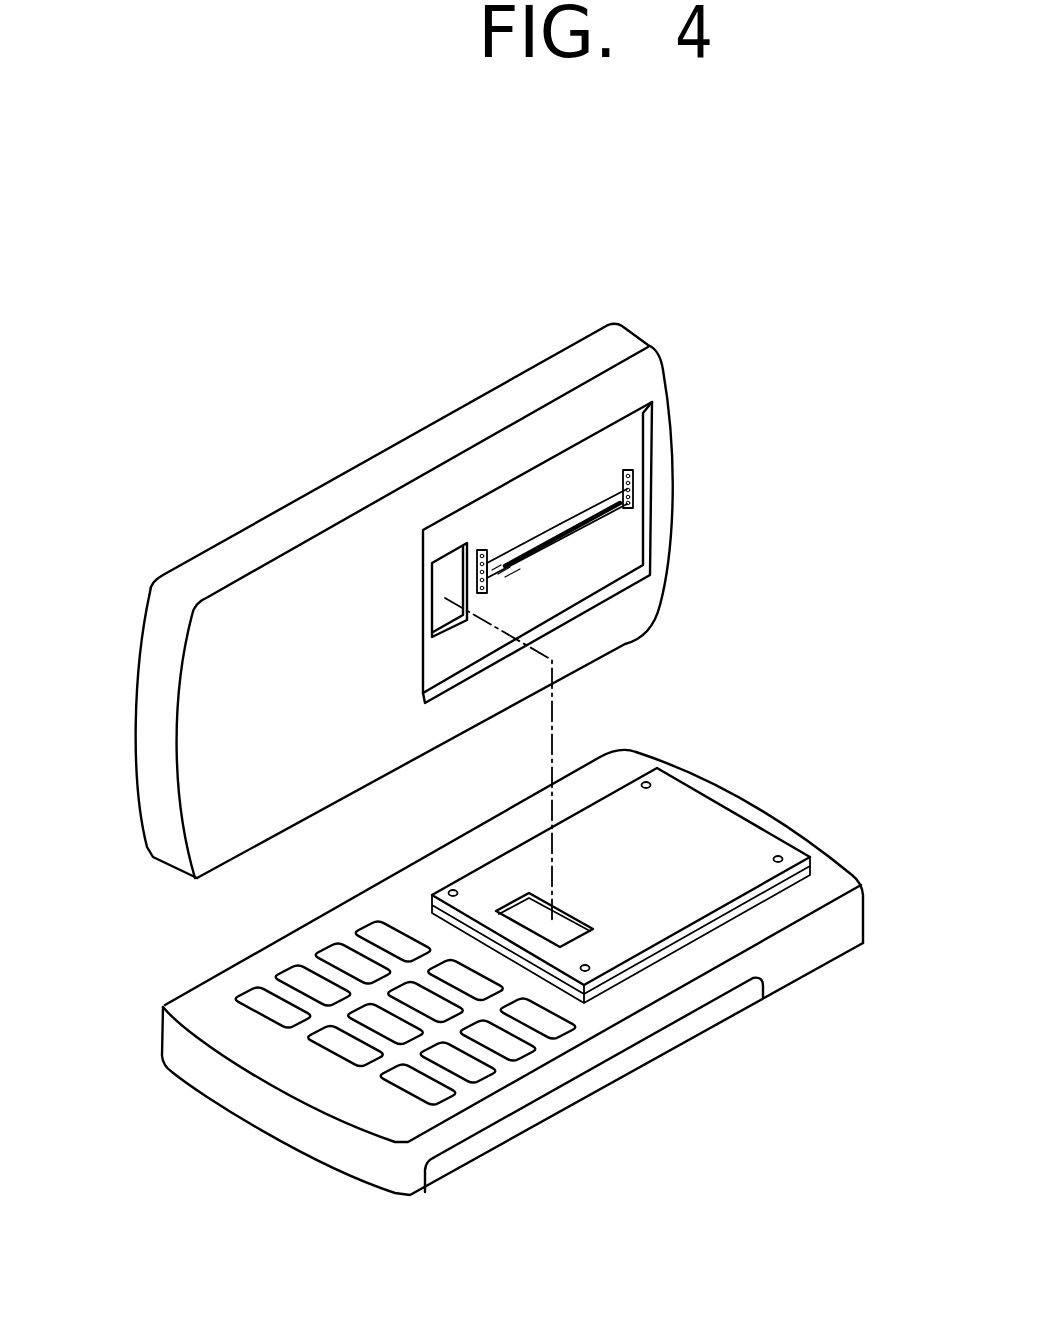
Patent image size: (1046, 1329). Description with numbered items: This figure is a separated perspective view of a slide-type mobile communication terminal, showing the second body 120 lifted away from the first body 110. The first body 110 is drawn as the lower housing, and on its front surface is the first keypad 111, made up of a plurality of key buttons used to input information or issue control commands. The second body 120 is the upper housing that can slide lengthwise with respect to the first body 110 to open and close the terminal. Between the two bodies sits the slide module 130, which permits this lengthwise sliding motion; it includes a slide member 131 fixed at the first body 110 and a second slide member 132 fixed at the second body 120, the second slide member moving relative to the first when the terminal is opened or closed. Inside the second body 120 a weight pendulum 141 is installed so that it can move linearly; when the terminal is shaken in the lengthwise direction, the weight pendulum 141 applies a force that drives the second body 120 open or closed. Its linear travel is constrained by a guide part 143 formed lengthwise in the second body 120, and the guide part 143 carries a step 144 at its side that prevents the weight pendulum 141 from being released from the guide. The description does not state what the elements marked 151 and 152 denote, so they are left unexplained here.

The first body 110 is at (242, 1095).
The first keypad 111 is at (437, 1091).
The second body 120 is at (156, 743).
The slide module 130 is at (797, 827).
The slide member 131 is at (690, 812).
The second slide member 132 is at (622, 540).
The weight pendulum 141 is at (500, 553).
The guide part 143 is at (573, 510).
The step 144 is at (592, 512).
The first connector terminal 151 is at (637, 465).
The second connector terminal 152 is at (483, 548).